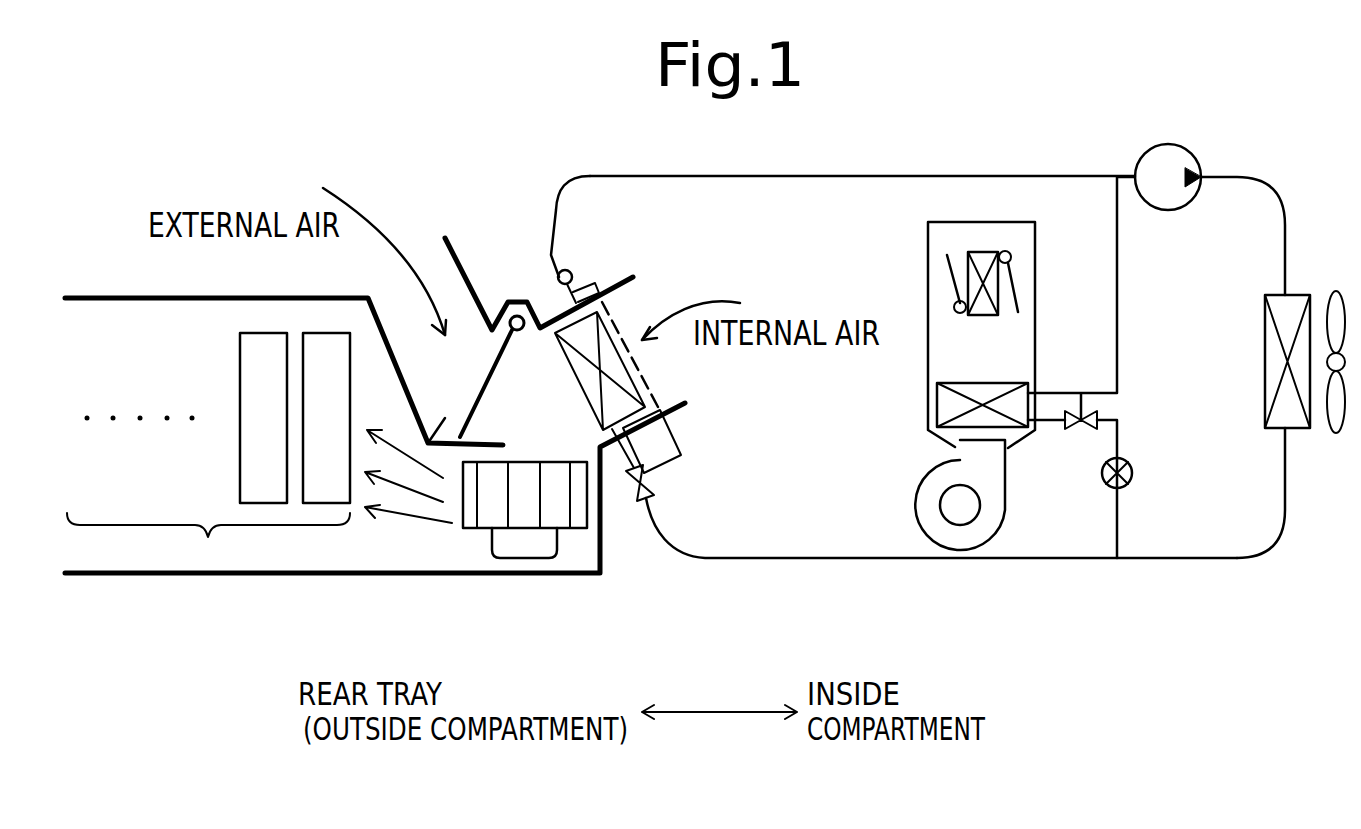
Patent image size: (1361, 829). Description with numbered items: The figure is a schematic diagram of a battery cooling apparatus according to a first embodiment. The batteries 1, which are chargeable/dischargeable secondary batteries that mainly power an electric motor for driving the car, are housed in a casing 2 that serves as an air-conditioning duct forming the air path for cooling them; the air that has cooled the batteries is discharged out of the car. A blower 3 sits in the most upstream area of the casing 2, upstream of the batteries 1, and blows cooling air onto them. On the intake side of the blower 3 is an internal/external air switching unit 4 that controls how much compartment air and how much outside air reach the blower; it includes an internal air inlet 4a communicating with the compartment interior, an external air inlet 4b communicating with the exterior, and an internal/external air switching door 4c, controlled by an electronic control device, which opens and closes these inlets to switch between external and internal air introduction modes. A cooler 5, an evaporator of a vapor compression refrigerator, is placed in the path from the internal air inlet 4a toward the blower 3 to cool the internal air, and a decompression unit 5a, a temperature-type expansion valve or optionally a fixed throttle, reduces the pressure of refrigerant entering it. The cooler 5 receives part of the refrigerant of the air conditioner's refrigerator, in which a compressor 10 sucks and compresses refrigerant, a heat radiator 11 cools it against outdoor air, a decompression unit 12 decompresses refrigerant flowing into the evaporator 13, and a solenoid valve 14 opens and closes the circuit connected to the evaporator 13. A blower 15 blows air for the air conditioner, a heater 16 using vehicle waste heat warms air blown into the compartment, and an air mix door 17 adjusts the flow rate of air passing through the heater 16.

The batteries 1 is at (259, 450).
The casing 2 is at (178, 573).
The blower 3 is at (525, 558).
The internal/external air switching unit 4 is at (493, 305).
The internal air inlet 4a is at (667, 387).
The external air inlet 4b is at (410, 337).
The internal/external air switching door 4c is at (412, 337).
The cooler 5 is at (613, 412).
The decompression unit 5a is at (645, 502).
The compressor 10 is at (1190, 150).
The heat radiator 11 is at (1297, 295).
The decompression unit 12 is at (1073, 432).
The evaporator 13 is at (990, 383).
The solenoid valve 14 is at (1132, 470).
The blower 15 is at (1007, 508).
The heater 16 is at (985, 250).
The air mix door 17 is at (947, 267).